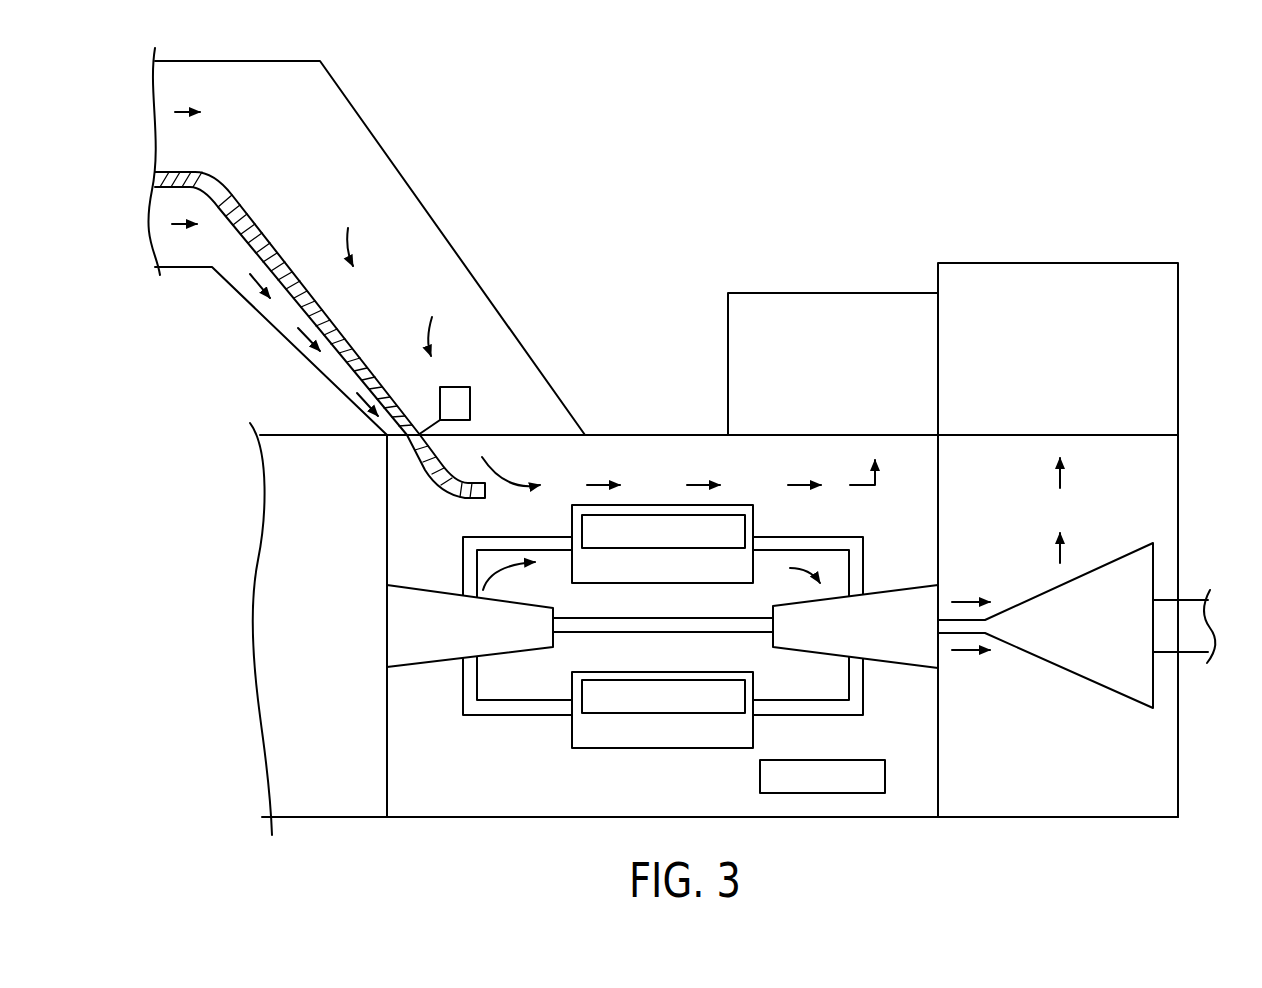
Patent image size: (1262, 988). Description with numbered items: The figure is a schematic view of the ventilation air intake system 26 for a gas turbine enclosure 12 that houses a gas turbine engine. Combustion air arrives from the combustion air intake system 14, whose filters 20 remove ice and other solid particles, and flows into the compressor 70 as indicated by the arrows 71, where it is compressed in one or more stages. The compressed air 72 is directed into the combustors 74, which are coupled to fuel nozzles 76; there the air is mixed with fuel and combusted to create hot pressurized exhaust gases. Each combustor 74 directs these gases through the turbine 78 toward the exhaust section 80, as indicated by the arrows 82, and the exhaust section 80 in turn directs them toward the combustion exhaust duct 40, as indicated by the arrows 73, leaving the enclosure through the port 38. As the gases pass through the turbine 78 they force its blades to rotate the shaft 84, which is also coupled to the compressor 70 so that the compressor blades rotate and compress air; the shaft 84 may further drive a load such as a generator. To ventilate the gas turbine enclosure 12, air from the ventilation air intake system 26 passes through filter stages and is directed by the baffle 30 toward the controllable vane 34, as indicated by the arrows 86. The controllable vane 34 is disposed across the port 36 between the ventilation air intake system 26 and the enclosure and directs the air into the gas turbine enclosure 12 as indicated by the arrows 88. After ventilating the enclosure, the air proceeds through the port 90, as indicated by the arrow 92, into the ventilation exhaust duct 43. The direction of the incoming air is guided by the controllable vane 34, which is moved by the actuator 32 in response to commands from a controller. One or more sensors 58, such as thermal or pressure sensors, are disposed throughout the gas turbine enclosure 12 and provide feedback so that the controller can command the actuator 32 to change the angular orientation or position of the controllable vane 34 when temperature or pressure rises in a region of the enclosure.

The gas turbine enclosure 12 is at (430, 817).
The combustion air intake system 14 is at (348, 830).
The filters 20 is at (662, 633).
The ventilation air intake system 26 is at (312, 44).
The baffle 30 is at (255, 200).
The actuator 32 is at (470, 400).
The controllable vane 34 is at (428, 483).
The port 36 is at (500, 435).
The port 38 is at (1098, 435).
The combustion exhaust duct 40 is at (1178, 355).
The ventilation exhaust duct 43 is at (728, 366).
The sensors 58 is at (822, 758).
The compressor 70 is at (425, 667).
The arrows 71 is at (365, 605).
The compressed air 72 is at (498, 575).
The arrows 73 is at (1058, 478).
The combustors 74 is at (660, 583).
The fuel nozzles 76 is at (582, 525).
The turbine 78 is at (900, 588).
The exhaust section 80 is at (1065, 672).
The arrows 82 is at (965, 685).
The shaft 84 is at (665, 618).
The arrows 86 is at (332, 413).
The arrows 88 is at (599, 485).
The port 90 is at (888, 435).
The arrow 92 is at (878, 488).